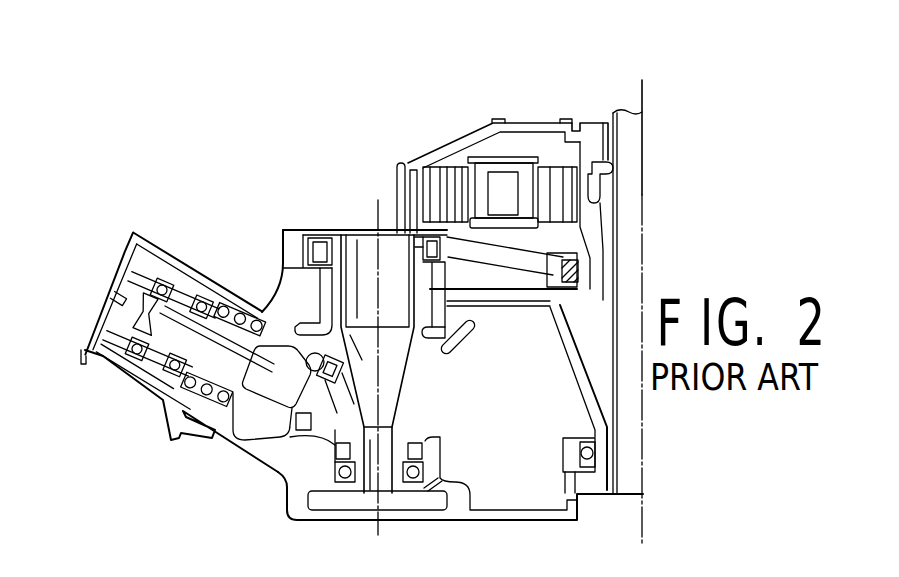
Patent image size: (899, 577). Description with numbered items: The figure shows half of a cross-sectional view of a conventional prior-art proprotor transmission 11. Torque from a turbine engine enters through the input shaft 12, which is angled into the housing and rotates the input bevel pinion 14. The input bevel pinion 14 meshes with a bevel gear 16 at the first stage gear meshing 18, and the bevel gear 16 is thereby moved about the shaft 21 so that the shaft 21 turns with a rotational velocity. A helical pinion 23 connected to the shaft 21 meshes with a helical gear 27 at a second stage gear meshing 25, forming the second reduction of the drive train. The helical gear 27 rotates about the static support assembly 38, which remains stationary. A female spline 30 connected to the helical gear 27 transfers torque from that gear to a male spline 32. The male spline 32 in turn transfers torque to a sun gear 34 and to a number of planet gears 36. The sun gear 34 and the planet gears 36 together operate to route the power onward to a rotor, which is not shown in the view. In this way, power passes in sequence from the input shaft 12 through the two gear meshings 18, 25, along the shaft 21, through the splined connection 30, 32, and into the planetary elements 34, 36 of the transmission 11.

The transmission 11 is at (200, 512).
The input shaft 12 is at (213, 293).
The input bevel pinion 14 is at (242, 280).
The bevel gear 16 is at (283, 222).
The first stage gear meshing 18 is at (273, 272).
The shaft 21 is at (353, 222).
The helical pinion 23 is at (417, 253).
The second stage gear meshing 25 is at (428, 340).
The helical gear 27 is at (447, 313).
The female spline 30 is at (566, 256).
The male spline 32 is at (610, 285).
The sun gear 34 is at (613, 188).
The planet gears 36 is at (498, 177).
The static support assembly 38 is at (613, 113).